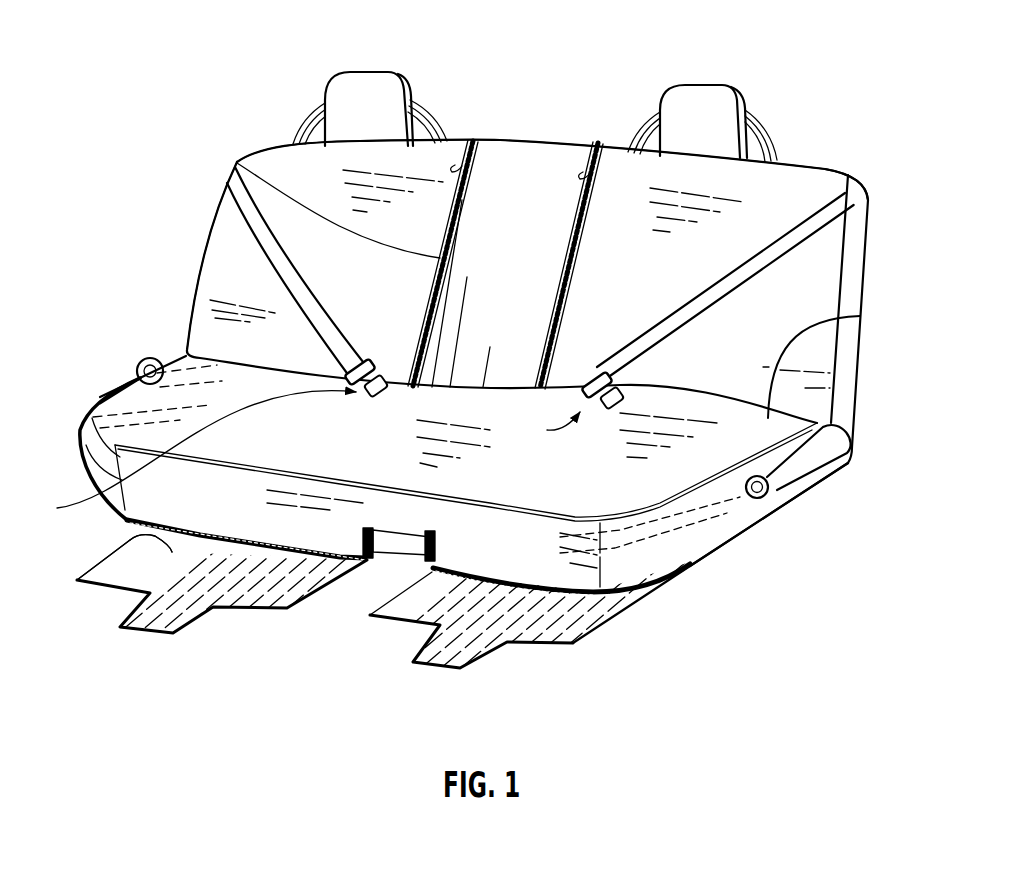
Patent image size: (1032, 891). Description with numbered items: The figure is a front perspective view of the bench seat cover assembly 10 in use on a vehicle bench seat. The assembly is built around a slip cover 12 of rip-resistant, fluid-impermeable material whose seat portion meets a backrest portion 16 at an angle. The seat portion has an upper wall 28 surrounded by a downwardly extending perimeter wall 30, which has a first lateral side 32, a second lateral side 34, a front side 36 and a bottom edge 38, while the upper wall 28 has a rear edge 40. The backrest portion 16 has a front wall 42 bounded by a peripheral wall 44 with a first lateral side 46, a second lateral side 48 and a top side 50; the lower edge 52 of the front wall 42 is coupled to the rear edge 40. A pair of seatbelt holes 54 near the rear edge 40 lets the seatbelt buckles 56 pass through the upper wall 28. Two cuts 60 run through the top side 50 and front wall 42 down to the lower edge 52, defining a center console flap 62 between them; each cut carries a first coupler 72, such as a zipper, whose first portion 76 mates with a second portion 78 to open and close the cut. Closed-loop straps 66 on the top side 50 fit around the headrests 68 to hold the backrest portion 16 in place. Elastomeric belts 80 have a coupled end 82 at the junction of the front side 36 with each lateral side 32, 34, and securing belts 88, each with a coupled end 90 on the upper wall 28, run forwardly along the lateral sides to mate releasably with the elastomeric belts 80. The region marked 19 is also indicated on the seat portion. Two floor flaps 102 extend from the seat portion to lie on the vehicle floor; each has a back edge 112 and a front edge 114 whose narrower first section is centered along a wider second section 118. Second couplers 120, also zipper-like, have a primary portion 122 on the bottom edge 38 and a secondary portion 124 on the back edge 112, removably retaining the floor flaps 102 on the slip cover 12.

The bench seat cover assembly 10 is at (240, 134).
The slip cover 12 is at (188, 200).
The backrest portion 16 is at (808, 186).
The anchor region 19 is at (135, 426).
The upper wall 28 is at (655, 470).
The perimeter wall 30 is at (793, 483).
The first lateral side 32 is at (100, 398).
The second lateral side 34 is at (750, 517).
The front side 36 is at (272, 530).
The bottom edge 38 is at (690, 580).
The rear edge 40 is at (835, 317).
The front wall 42 is at (693, 177).
The peripheral wall 44 is at (855, 257).
The first lateral side 46 is at (200, 275).
The second lateral side 48 is at (872, 228).
The top side 50 is at (493, 153).
The lower edge 52 is at (670, 390).
The seatbelt holes 54 is at (300, 458).
The seatbelt buckles 56 is at (372, 366).
The cuts 60 is at (474, 132).
The center console flap 62 is at (519, 165).
The straps 66 is at (320, 107).
The headrests 68 is at (353, 72).
The first couplers 72 is at (457, 163).
The first portion 76 is at (237, 163).
The second portion 78 is at (443, 243).
The elastomeric belts 80 is at (697, 537).
The coupled end 82 is at (587, 578).
The securing belts 88 is at (850, 464).
The coupled end 90 is at (820, 413).
The floor flaps 102 is at (77, 582).
The back edge 112 is at (133, 522).
The front edge 114 is at (260, 612).
The second section 118 is at (112, 602).
The second couplers 120 is at (357, 530).
The primary portion 122 is at (83, 568).
The secondary portion 124 is at (257, 545).